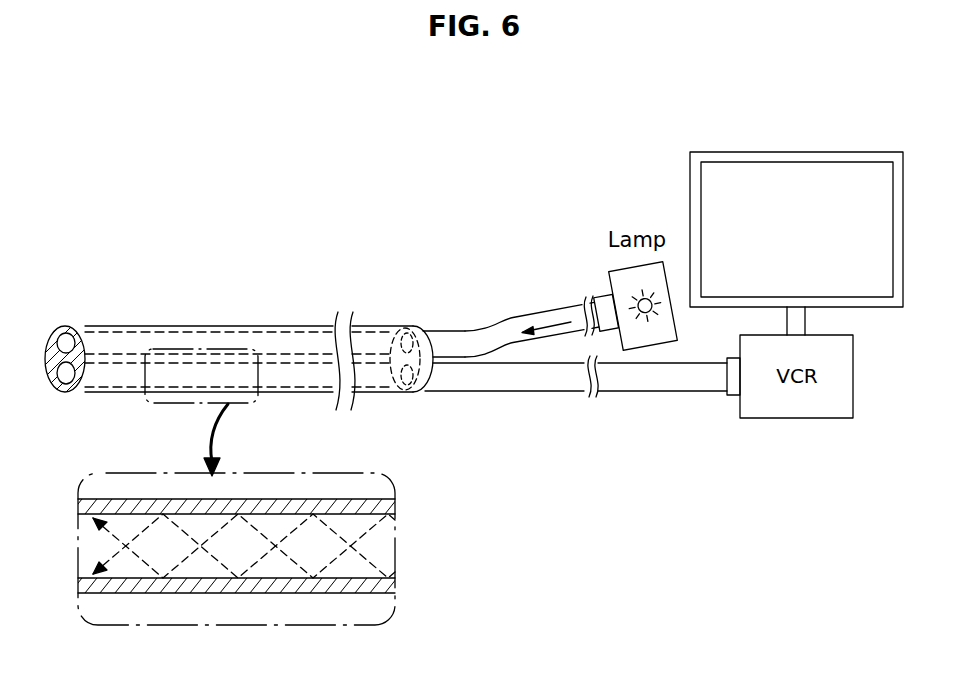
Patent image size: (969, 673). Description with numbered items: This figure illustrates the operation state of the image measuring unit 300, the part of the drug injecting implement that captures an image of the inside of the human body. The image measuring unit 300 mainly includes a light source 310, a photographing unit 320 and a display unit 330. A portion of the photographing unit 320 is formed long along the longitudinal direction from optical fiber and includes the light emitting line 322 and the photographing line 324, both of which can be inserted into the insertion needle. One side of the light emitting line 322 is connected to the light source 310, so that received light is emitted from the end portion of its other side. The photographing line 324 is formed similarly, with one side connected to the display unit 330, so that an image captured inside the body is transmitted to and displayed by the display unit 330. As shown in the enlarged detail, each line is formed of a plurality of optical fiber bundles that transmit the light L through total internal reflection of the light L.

The image measuring unit 300 is at (283, 228).
The light source 310 is at (650, 340).
The photographing unit 320 is at (507, 262).
The light emitting line 322 is at (447, 343).
The photographing line 324 is at (509, 374).
The display unit 330 is at (732, 157).
The light L is at (372, 562).